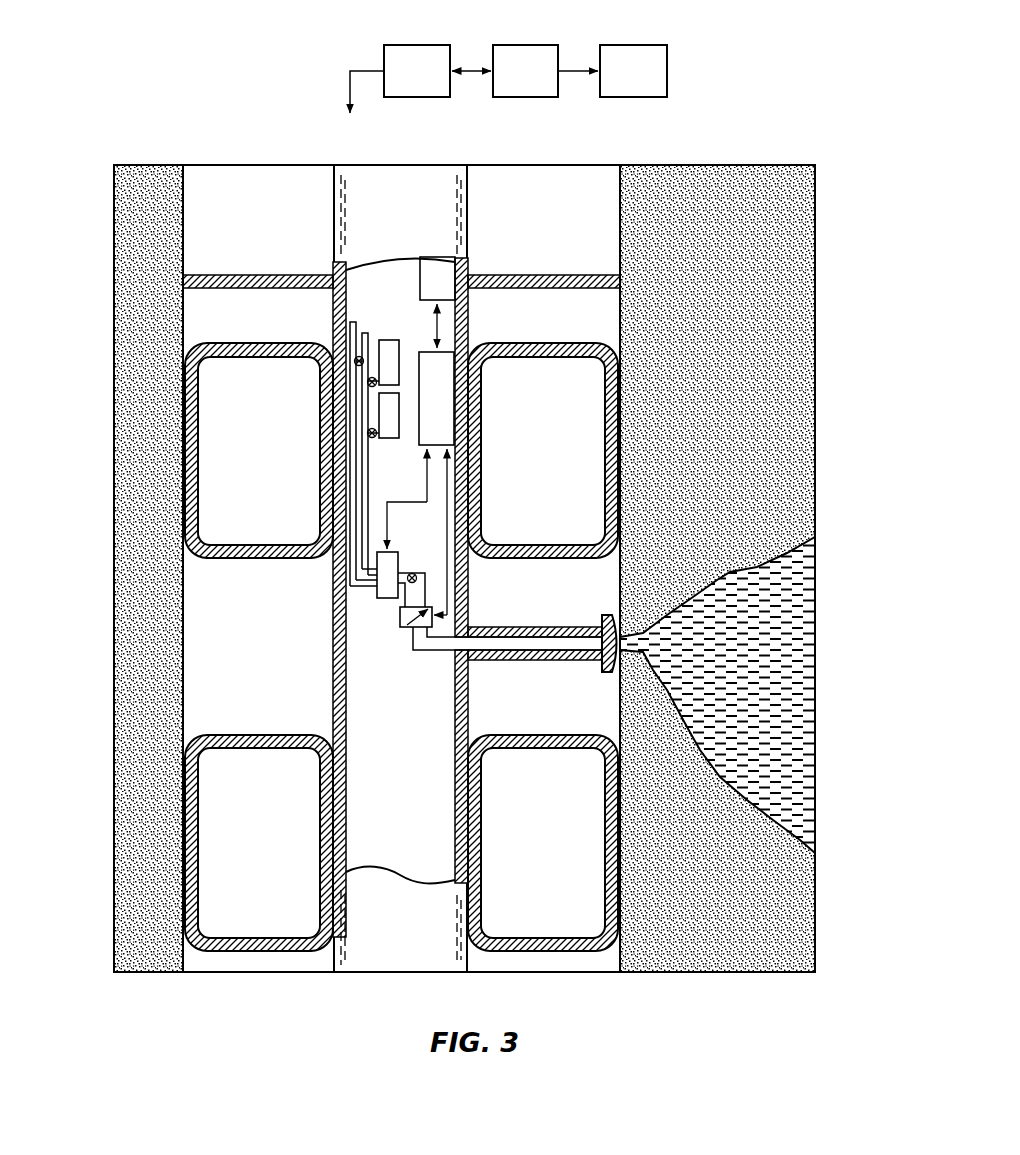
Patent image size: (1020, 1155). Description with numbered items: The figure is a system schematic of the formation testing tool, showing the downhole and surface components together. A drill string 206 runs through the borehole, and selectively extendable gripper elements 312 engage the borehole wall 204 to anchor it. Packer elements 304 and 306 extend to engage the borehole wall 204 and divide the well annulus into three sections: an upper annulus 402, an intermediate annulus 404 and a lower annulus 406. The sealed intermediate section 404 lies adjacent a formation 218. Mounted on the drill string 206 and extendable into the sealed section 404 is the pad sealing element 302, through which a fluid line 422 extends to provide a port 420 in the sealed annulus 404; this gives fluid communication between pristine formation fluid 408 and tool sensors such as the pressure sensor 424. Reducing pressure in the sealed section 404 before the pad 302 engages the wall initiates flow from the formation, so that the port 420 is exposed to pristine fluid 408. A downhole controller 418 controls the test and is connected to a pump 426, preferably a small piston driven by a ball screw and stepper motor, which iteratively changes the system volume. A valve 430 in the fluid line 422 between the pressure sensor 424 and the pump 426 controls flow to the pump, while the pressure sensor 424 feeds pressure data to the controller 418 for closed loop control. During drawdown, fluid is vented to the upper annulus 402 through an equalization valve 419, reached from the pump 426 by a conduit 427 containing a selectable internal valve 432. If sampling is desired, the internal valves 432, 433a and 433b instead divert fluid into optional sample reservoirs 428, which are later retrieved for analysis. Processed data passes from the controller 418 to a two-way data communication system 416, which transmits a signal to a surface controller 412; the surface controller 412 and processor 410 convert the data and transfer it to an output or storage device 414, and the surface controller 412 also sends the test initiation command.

The borehole wall 204 is at (620, 187).
The drill string 206 is at (335, 192).
The formation 218 is at (805, 320).
The pad sealing element 302 is at (486, 628).
The packer element 304 is at (293, 353).
The packer element 306 is at (290, 757).
The gripper elements 312 is at (233, 275).
The upper annulus 402 is at (237, 192).
The intermediate annulus 404 is at (210, 636).
The lower annulus 406 is at (219, 964).
The pristine formation fluid 408 is at (805, 650).
The processor 410 is at (527, 45).
The surface controller 412 is at (425, 45).
The output or storage device 414 is at (640, 45).
The two-way data communication system 416 is at (437, 278).
The downhole controller 418 is at (452, 352).
The equalization valve 419 is at (352, 328).
The port 420 is at (603, 622).
The fluid line 422 is at (518, 662).
The pressure sensor 424 is at (400, 627).
The pump 426 is at (378, 600).
The conduit 427 is at (338, 565).
The sample reservoirs 428 is at (392, 340).
The valve 430 is at (411, 572).
The internal valve 432 is at (352, 352).
The internal valve 433a is at (370, 383).
The internal valve 433b is at (370, 434).